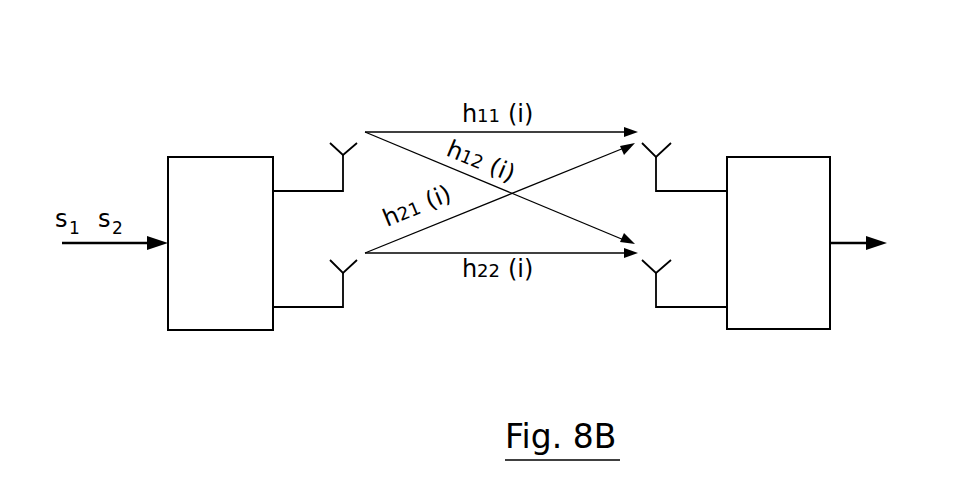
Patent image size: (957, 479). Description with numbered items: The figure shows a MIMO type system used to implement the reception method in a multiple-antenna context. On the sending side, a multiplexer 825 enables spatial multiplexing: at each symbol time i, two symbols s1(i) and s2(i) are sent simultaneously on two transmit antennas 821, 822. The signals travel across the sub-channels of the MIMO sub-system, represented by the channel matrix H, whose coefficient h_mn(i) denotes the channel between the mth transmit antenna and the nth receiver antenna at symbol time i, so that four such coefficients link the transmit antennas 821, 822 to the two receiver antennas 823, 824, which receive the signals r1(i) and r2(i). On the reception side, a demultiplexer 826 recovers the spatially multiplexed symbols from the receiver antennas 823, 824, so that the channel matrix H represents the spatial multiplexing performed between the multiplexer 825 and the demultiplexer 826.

The transmit antenna 821 is at (342, 171).
The transmit antenna 822 is at (345, 290).
The receiver antenna 823 is at (664, 153).
The receiver antenna 824 is at (656, 288).
The multiplexer 825 is at (217, 175).
The demultiplexer 826 is at (778, 177).